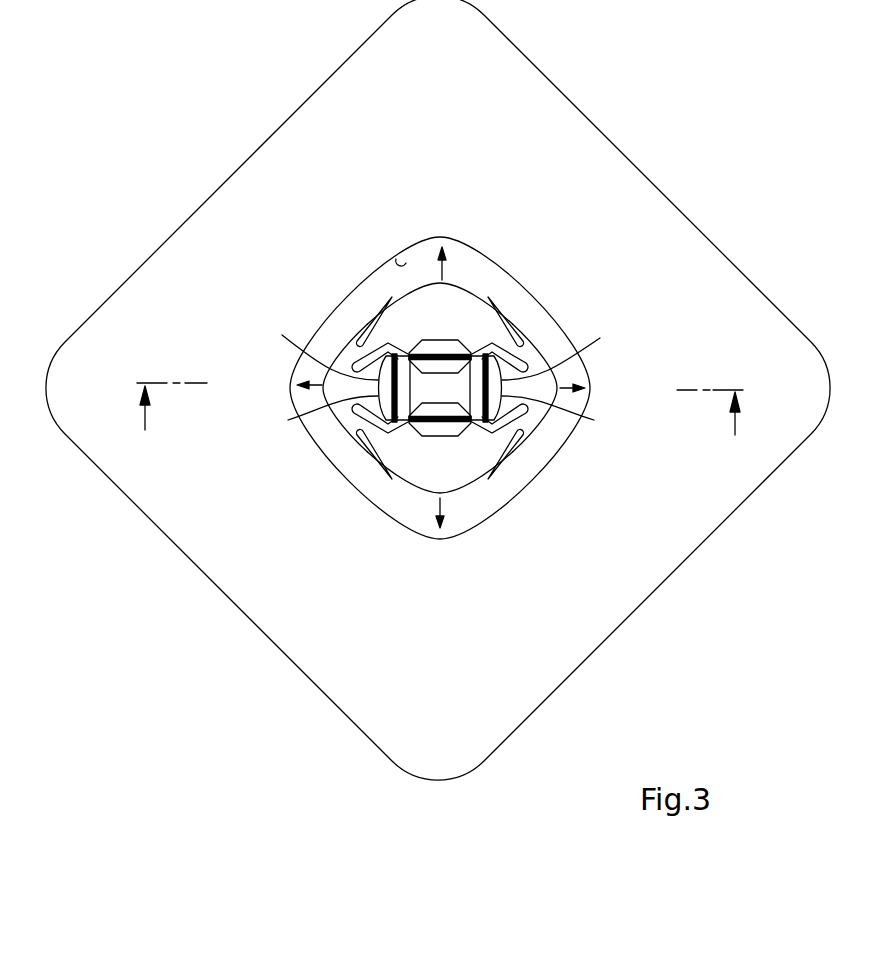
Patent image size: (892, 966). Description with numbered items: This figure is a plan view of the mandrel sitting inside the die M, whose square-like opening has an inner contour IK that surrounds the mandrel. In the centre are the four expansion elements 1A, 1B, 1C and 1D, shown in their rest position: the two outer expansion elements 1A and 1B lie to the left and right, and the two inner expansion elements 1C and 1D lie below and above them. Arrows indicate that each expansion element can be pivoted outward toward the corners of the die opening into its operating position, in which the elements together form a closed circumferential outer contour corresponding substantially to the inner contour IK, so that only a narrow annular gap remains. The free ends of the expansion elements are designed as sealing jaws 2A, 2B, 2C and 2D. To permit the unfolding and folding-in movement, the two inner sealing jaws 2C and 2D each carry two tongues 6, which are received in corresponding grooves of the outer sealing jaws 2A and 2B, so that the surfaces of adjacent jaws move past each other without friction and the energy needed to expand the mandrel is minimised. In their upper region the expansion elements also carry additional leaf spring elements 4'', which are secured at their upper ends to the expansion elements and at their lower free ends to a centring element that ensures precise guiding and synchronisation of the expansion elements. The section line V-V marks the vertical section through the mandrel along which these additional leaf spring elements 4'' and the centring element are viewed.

The die M is at (360, 83).
The inner contour IK is at (398, 264).
The expansion element 1A is at (387, 389).
The expansion element 1B is at (495, 390).
The expansion element 1C is at (445, 420).
The expansion element 1D is at (442, 350).
The sealing jaw 2A is at (343, 400).
The sealing jaw 2B is at (542, 403).
The sealing jaw 2C is at (427, 467).
The sealing jaw 2D is at (468, 317).
The additional leaf spring elements 4'' is at (441, 367).
The tongues 6 is at (358, 360).
The section line V- V is at (127, 394).